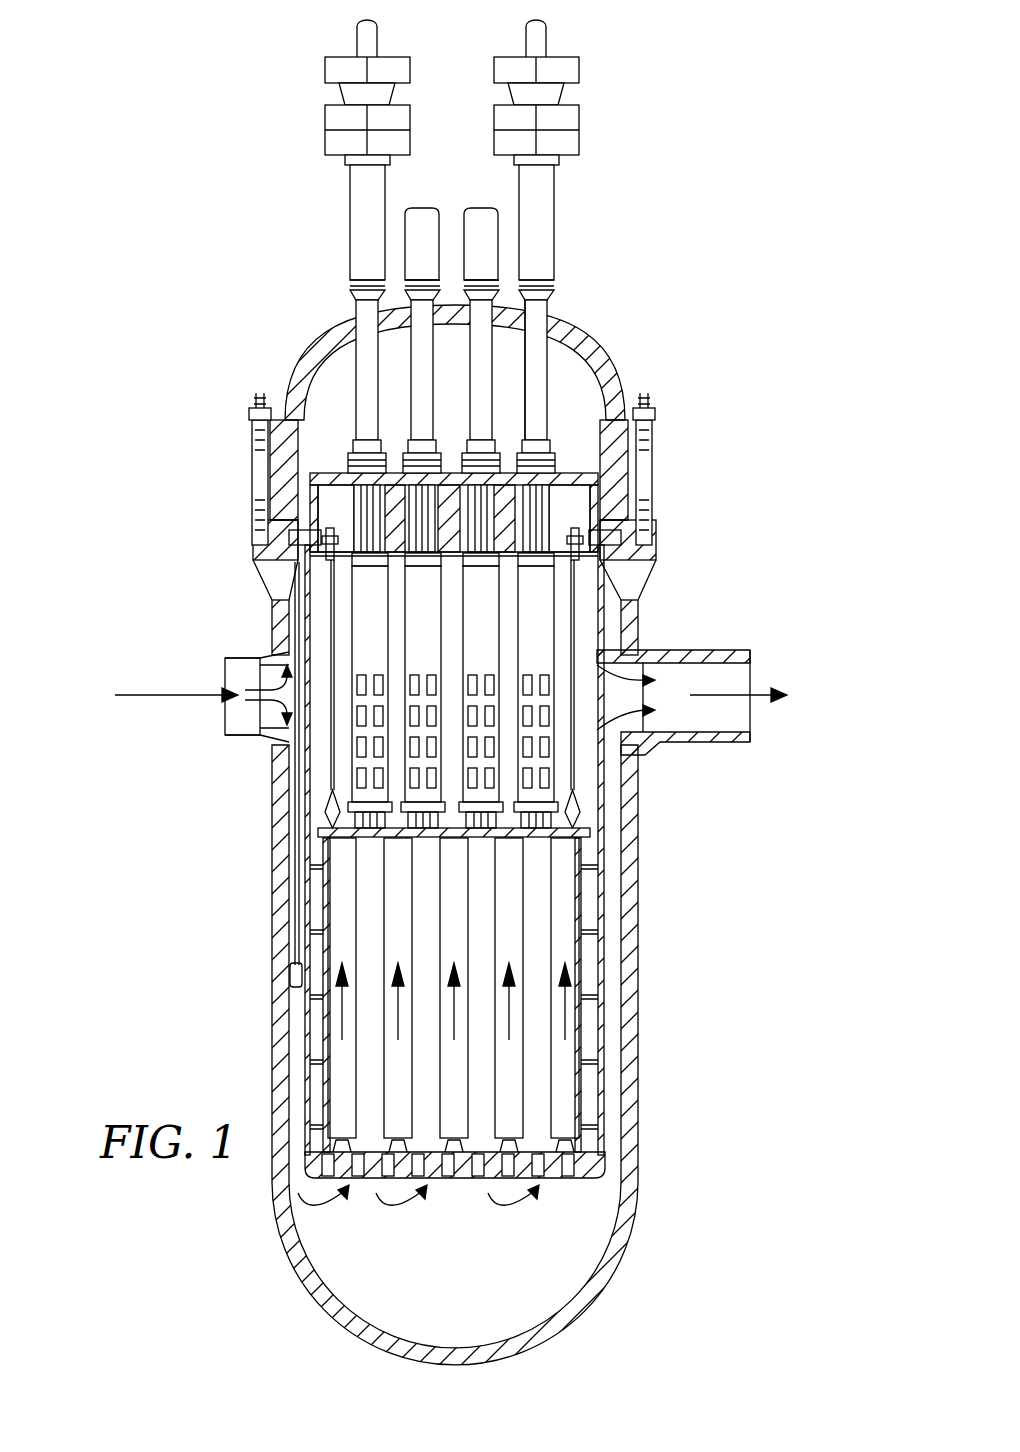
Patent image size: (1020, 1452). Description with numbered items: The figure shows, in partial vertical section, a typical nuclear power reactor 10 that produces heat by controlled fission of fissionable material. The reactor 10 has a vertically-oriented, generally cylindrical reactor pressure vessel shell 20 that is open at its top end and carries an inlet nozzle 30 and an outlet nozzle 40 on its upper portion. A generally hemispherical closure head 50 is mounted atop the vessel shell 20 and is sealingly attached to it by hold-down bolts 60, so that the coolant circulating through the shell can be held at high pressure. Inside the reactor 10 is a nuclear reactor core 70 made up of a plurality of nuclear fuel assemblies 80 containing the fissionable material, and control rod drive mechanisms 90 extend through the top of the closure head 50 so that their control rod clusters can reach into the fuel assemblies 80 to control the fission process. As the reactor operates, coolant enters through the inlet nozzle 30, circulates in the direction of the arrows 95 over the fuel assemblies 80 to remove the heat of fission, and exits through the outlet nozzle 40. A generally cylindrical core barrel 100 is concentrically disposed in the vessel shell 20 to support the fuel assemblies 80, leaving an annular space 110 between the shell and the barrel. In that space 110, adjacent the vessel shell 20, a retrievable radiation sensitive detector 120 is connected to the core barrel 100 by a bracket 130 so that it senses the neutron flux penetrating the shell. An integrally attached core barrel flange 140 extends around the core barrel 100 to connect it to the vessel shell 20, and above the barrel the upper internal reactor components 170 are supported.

The nuclear power reactor 10 is at (239, 276).
The reactor pressure vessel shell 20 is at (632, 622).
The inlet nozzle 30 is at (252, 655).
The outlet nozzle 40 is at (667, 650).
The reactor vessel closure head 50 is at (335, 368).
The hold-down bolts 60 is at (257, 395).
The nuclear reactor core 70 is at (542, 912).
The nuclear fuel assemblies 80 is at (537, 1085).
The control rod drive mechanisms 90 is at (530, 210).
The arrows 95 is at (156, 690).
The core barrel 100 is at (318, 610).
The annular space 110 is at (292, 628).
The retrievable radiation sensitive detector 120 is at (288, 973).
The bracket 130 is at (297, 950).
The core barrel flange 140 is at (262, 567).
The upper internal reactor components 170 is at (537, 400).